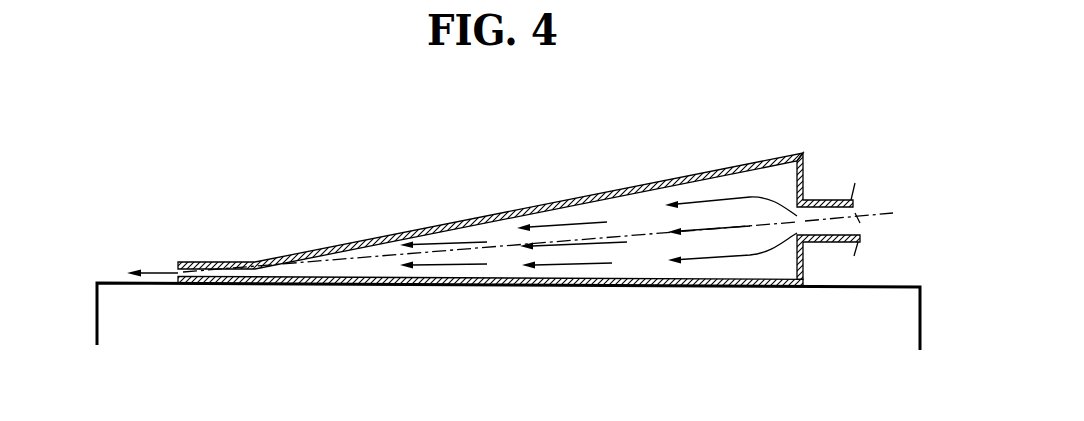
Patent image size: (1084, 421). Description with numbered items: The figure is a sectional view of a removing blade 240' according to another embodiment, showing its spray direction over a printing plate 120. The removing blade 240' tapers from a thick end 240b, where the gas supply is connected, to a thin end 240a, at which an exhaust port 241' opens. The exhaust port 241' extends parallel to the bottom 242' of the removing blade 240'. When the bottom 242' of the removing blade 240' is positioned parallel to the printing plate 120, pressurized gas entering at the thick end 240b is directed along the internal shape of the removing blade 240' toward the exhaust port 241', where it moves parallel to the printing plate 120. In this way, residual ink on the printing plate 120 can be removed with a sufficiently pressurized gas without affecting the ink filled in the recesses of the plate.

The printing plate 120 is at (110, 293).
The exhaust port 241' is at (160, 220).
The thin end 240a is at (253, 265).
The removing blade 240' is at (518, 229).
The thick end 240b is at (803, 173).
The bottom 242' is at (490, 336).